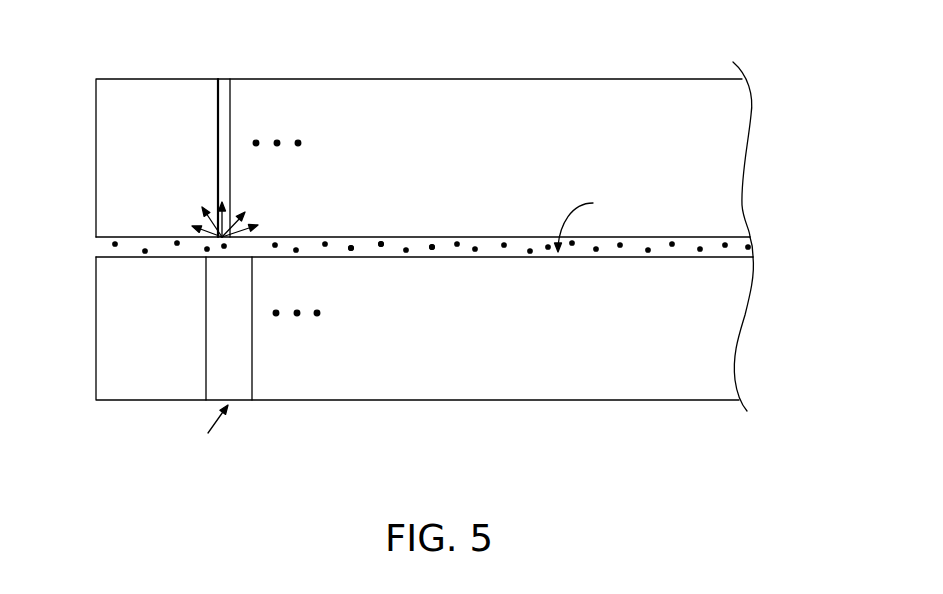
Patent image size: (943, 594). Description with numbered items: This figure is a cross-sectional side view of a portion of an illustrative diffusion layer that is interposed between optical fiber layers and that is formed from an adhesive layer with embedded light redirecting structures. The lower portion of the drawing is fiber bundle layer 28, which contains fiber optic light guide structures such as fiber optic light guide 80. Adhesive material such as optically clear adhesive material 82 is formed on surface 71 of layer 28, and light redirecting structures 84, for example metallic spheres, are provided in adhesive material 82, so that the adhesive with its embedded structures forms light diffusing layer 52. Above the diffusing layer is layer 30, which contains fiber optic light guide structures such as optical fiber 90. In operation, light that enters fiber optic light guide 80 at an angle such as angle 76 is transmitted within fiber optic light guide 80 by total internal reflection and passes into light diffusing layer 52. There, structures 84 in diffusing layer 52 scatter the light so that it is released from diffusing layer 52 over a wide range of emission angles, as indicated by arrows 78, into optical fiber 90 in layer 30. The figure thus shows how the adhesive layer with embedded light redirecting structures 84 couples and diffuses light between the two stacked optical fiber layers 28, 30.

The fiber bundle layer 28 is at (112, 311).
The layer 30 is at (112, 165).
The light diffusing layer 52 is at (468, 223).
The surface 71 is at (590, 222).
The angle 76 is at (220, 427).
The arrows 78 is at (245, 212).
The fiber optic light guide 80 is at (240, 358).
The optically clear adhesive material 82 is at (492, 245).
The light redirecting structures 84 is at (351, 247).
The optical fiber 90 is at (223, 85).